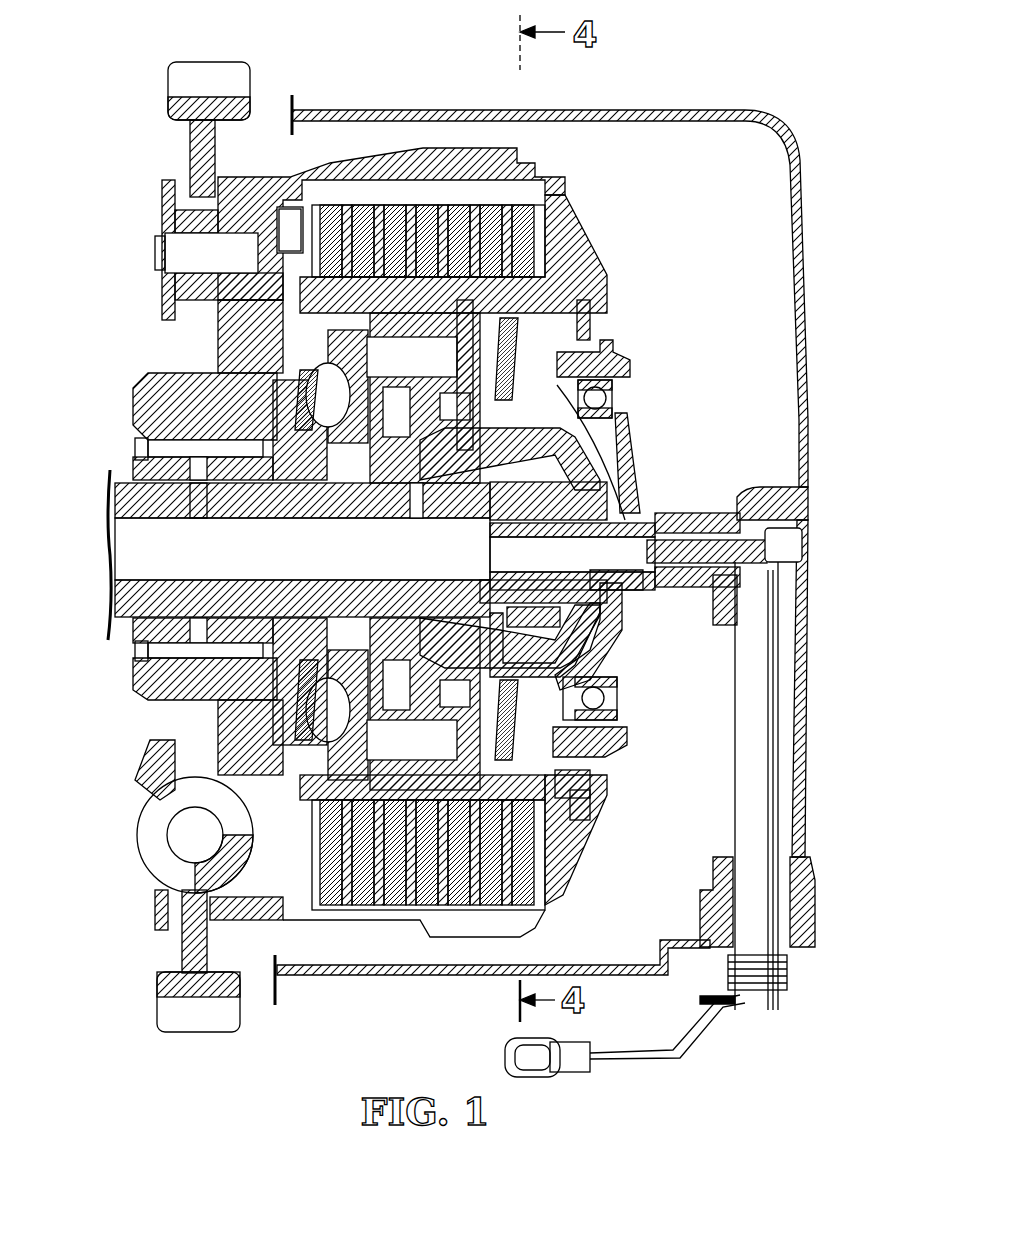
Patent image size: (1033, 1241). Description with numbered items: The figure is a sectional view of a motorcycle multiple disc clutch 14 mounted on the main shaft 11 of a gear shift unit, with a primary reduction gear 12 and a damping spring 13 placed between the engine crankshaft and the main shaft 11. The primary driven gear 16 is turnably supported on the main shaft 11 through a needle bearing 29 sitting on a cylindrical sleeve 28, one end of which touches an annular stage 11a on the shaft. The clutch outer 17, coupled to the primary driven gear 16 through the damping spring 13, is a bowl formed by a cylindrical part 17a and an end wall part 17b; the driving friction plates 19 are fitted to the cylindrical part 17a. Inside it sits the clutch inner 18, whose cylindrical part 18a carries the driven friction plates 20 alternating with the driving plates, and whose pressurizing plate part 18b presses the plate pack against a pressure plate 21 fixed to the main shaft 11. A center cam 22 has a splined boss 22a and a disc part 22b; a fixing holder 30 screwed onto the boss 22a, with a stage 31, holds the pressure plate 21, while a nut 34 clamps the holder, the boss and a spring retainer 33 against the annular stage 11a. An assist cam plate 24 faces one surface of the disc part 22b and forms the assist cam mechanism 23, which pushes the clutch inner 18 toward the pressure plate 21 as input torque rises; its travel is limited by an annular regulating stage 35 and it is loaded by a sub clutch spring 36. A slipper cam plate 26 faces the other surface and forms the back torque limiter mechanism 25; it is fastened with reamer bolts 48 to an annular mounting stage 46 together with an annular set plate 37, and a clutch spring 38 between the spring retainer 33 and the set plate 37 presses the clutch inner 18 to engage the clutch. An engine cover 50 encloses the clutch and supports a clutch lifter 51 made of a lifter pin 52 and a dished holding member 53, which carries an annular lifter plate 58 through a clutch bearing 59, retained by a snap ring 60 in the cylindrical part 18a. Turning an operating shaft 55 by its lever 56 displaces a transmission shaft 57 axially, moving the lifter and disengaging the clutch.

The main shaft 11 is at (107, 625).
The annular stage 11a is at (135, 465).
The primary reduction gear 12 is at (255, 96).
The damping spring 13 is at (163, 870).
The multiple disc clutch 14 is at (612, 277).
The primary driven gear 16 is at (215, 78).
The clutch outer 17 is at (493, 140).
The cylindrical part 17a is at (370, 165).
The end wall part 17b is at (180, 220).
The clutch inner 18 is at (612, 302).
The cylindrical part 18a is at (410, 300).
The pressurizing plate part 18b is at (585, 240).
The driving friction plates 19 is at (395, 915).
The driven friction plates 20 is at (425, 915).
The pressure plate 21 is at (300, 245).
The center cam 22 is at (348, 488).
The cylindrical boss 22a is at (467, 467).
The disc part 22b is at (425, 700).
The assist cam mechanism 23 is at (383, 657).
The assist cam plate 24 is at (375, 352).
The back torque limiter mechanism 25 is at (427, 447).
The slipper cam plate 26 is at (480, 330).
The cylindrical sleeve 28 is at (173, 477).
The needle bearing 29 is at (180, 447).
The fixing holder 30 is at (290, 487).
The stage 31 is at (300, 673).
The spring retainer 33 is at (577, 447).
The nut 34 is at (600, 650).
The annular regulating stage 35 is at (320, 320).
The sub clutch spring 36 is at (265, 705).
The annular set plate 37 is at (567, 833).
The clutch spring 38 is at (597, 750).
The annular mounting stage 46 is at (523, 770).
The reamer bolts 48 is at (595, 358).
The engine cover 50 is at (778, 298).
The clutch lifter 51 is at (648, 590).
The lifter pin 52 is at (563, 580).
The holding member 53 is at (623, 428).
The operating shaft 55 is at (757, 752).
The lever 56 is at (620, 1058).
The transmission shaft 57 is at (713, 520).
The lifter plate 58 is at (610, 363).
The clutch bearing 59 is at (600, 398).
The snap ring 60 is at (583, 798).